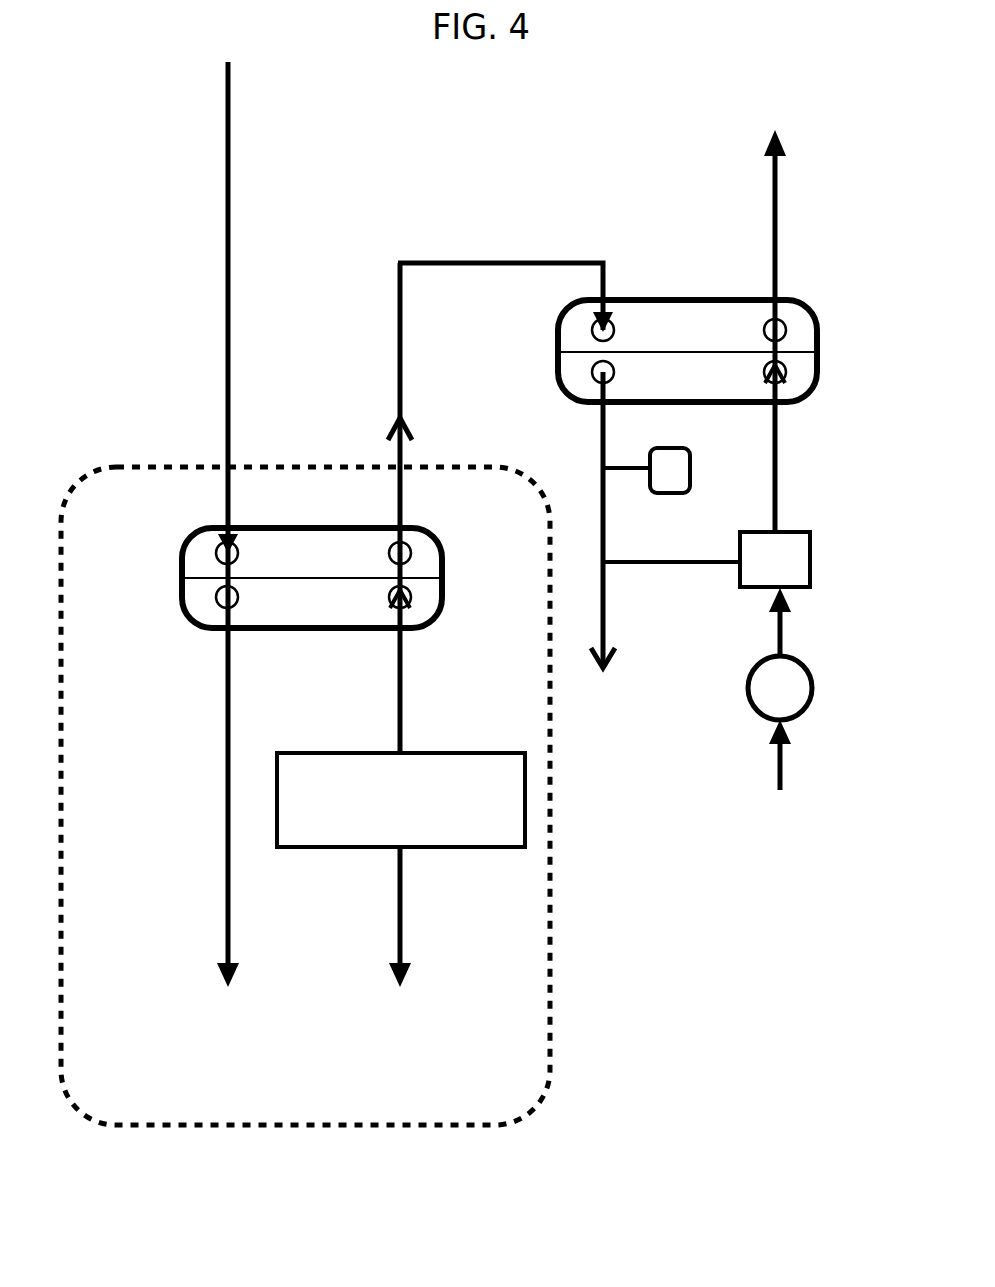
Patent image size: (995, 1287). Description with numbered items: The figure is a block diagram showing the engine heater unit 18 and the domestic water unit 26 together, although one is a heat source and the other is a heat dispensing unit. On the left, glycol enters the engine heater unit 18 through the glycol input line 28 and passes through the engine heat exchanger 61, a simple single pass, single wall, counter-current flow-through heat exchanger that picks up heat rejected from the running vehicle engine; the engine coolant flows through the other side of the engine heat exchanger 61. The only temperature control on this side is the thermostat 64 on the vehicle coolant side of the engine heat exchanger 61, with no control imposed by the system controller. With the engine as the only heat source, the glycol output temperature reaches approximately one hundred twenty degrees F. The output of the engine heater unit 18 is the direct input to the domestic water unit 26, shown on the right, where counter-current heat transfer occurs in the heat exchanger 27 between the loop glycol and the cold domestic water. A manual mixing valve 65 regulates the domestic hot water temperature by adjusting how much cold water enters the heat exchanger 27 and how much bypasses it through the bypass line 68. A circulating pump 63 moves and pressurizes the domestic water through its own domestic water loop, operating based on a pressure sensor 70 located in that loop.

The engine heater unit 18 is at (150, 448).
The glycol input line 28 is at (228, 123).
The engine heat exchanger 61 is at (200, 610).
The thermostat 64 is at (450, 835).
The domestic water unit 26 is at (665, 232).
The heat exchanger 27 is at (727, 300).
The pressure sensor 70 is at (688, 462).
The bypass line 68 is at (675, 560).
The manual mixing valve 65 is at (795, 537).
The circulating pump 63 is at (750, 695).